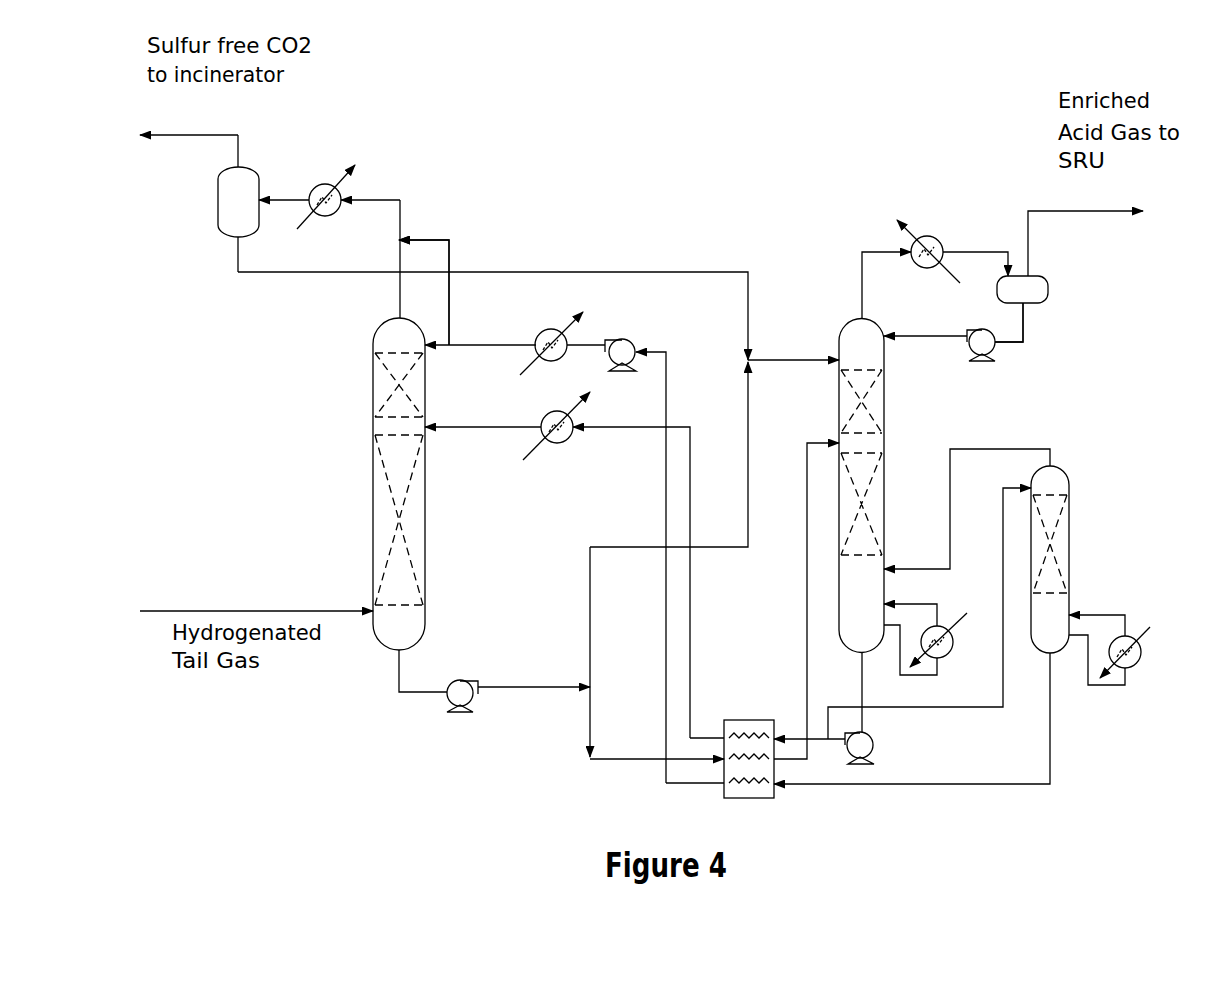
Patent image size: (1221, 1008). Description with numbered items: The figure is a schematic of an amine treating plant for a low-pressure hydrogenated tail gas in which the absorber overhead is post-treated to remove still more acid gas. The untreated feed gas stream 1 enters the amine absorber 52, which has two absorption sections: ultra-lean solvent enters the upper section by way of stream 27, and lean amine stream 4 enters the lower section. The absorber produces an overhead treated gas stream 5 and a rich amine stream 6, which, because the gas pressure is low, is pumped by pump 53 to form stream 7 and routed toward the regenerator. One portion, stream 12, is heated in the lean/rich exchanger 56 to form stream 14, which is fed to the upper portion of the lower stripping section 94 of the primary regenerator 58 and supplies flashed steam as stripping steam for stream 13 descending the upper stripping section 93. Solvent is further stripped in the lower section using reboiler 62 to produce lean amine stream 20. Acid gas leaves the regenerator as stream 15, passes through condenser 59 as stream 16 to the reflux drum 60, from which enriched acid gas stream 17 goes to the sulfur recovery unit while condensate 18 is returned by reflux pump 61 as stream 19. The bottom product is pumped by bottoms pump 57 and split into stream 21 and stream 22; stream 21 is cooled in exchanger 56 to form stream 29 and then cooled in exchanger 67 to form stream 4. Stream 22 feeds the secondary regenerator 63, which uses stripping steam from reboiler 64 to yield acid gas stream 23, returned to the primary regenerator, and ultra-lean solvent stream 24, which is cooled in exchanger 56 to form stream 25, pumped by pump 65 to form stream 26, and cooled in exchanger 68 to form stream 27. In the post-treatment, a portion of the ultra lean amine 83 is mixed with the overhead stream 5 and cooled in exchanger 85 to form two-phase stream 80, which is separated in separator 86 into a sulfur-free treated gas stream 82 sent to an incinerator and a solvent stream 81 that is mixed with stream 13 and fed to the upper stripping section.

The untreated sour feed gas stream 1 is at (273, 610).
The lean amine stream 4 is at (450, 427).
The overhead treated gas stream 5 is at (398, 220).
The rich amine stream 6 is at (399, 690).
The rich amine stream 7 is at (545, 688).
The rich amine second portion stream 12 is at (643, 758).
The reflux stream 13 is at (808, 360).
The heated rich amine stream 14 is at (806, 622).
The acid gas stream 15 is at (862, 250).
The condensed acid gas stream 16 is at (1005, 247).
The acid gas stream 17 is at (1093, 208).
The condensate 18 is at (1008, 337).
The reflux return stream 19 is at (937, 333).
The lean amine stream 20 is at (862, 687).
The lean amine portion stream 21 is at (797, 735).
The lean amine portion stream 22 is at (985, 710).
The acid gas stream 23 is at (992, 447).
The ultra-lean solvent stream 24 is at (998, 782).
The cooled ultra-lean solvent stream 25 is at (668, 413).
The pumped ultra-lean solvent stream 26 is at (590, 343).
The ultra-lean solvent stream 27 is at (503, 343).
The cooled lean amine stream 29 is at (693, 562).
The amine absorber 52 is at (372, 345).
The pump 53 is at (460, 682).
The lean/rich exchanger 56 is at (753, 720).
The bottoms pump 57 is at (875, 740).
The primary regenerator 58 is at (847, 315).
The condenser 59 is at (935, 235).
The reflux drum 60 is at (1050, 288).
The reflux pump 61 is at (995, 365).
The reboiler 62 is at (957, 637).
The secondary regenerator 63 is at (1069, 485).
The reboiler 64 is at (1142, 650).
The pump 65 is at (633, 340).
The exchanger 67 is at (562, 410).
The exchanger 68 is at (542, 330).
The two-phase stream 80 is at (273, 198).
The solvent stream 81 is at (535, 272).
The treated gas stream 82 is at (182, 133).
The ultra lean amine portion 83 is at (440, 240).
The exchanger 85 is at (327, 183).
The separator 86 is at (217, 217).
The upper stripping section 93 is at (890, 390).
The lower stripping section 94 is at (887, 523).